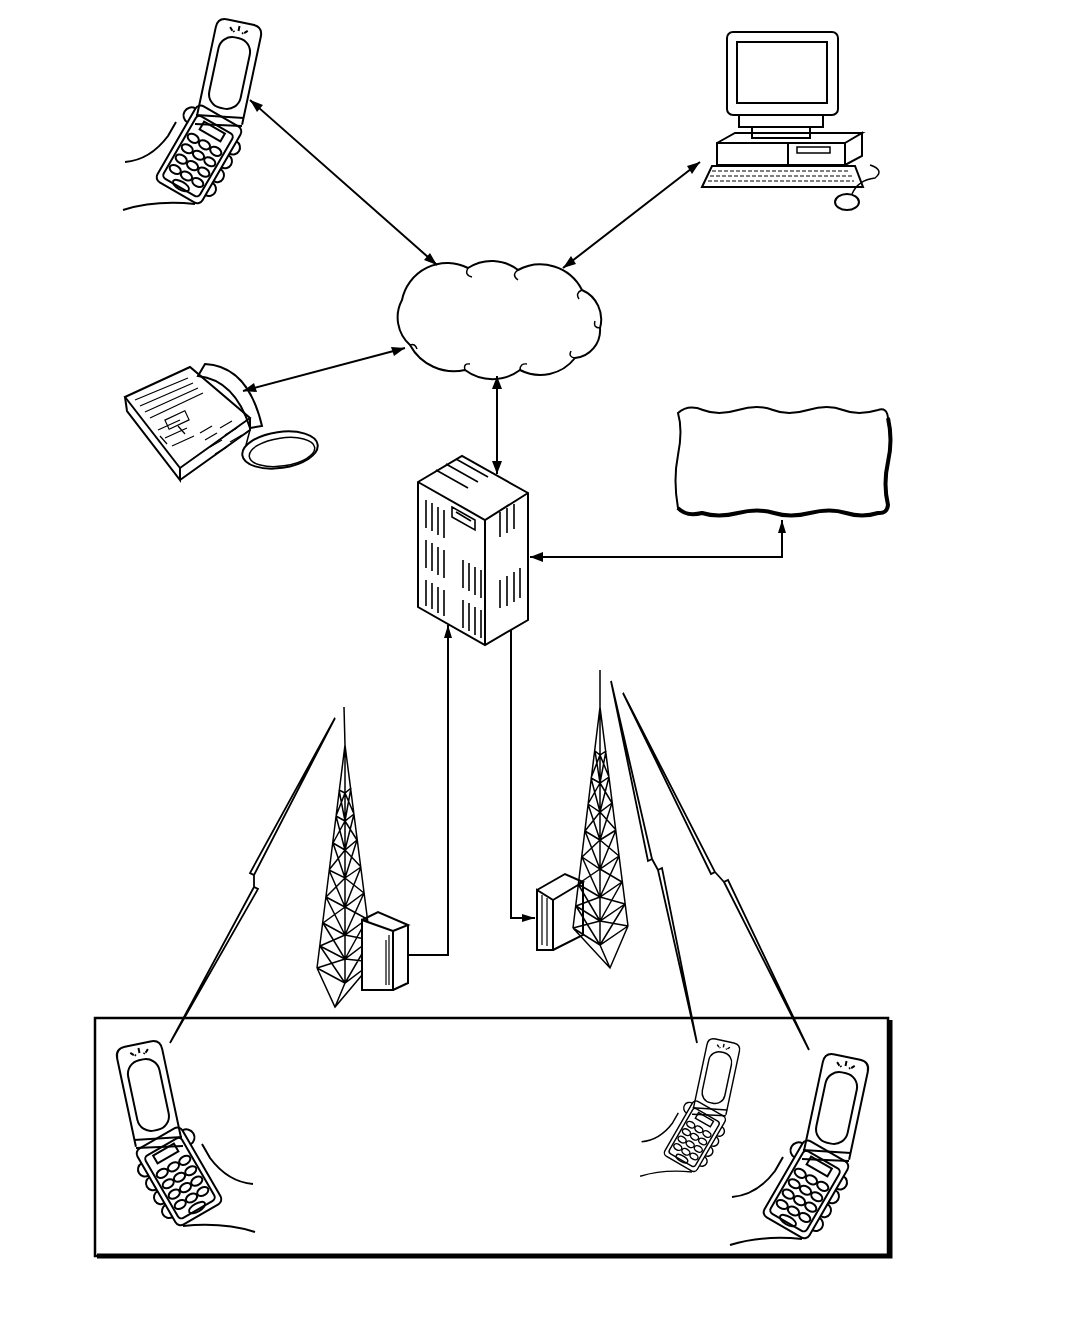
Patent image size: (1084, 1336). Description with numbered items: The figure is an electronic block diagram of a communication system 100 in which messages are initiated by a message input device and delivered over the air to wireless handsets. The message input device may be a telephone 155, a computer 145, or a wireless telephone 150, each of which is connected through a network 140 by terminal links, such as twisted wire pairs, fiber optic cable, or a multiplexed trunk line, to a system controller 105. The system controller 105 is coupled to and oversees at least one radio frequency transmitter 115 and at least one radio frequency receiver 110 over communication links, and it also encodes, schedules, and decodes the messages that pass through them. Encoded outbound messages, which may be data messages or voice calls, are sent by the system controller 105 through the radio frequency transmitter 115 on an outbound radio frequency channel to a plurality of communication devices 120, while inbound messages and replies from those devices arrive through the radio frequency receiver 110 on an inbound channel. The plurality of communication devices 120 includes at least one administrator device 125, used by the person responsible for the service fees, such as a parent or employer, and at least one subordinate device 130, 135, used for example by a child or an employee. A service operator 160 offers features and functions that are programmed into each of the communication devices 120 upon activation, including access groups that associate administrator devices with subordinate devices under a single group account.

The communication system 100 is at (493, 636).
The system controller 105 is at (418, 542).
The radio frequency receiver 110 is at (398, 990).
The radio frequency transmitter 115 is at (540, 954).
The plurality of communication devices 120 is at (492, 1137).
The administrator device 125 is at (166, 1083).
The subordinate device 130 is at (702, 1069).
The subordinate device 135 is at (820, 1080).
The network 140 is at (497, 262).
The computer 145 is at (727, 70).
The wireless telephone 150 is at (258, 66).
The telephone 155 is at (148, 392).
The service operator 160 is at (803, 407).